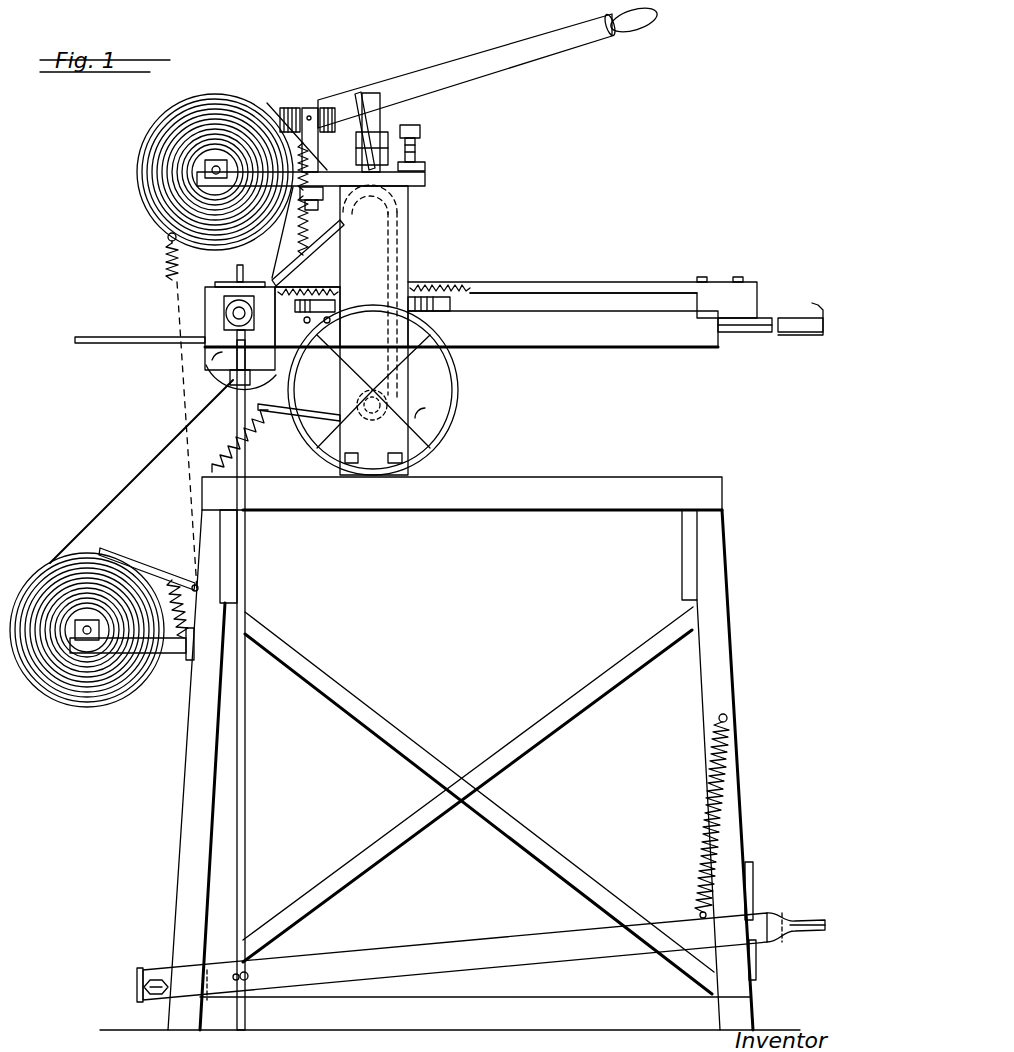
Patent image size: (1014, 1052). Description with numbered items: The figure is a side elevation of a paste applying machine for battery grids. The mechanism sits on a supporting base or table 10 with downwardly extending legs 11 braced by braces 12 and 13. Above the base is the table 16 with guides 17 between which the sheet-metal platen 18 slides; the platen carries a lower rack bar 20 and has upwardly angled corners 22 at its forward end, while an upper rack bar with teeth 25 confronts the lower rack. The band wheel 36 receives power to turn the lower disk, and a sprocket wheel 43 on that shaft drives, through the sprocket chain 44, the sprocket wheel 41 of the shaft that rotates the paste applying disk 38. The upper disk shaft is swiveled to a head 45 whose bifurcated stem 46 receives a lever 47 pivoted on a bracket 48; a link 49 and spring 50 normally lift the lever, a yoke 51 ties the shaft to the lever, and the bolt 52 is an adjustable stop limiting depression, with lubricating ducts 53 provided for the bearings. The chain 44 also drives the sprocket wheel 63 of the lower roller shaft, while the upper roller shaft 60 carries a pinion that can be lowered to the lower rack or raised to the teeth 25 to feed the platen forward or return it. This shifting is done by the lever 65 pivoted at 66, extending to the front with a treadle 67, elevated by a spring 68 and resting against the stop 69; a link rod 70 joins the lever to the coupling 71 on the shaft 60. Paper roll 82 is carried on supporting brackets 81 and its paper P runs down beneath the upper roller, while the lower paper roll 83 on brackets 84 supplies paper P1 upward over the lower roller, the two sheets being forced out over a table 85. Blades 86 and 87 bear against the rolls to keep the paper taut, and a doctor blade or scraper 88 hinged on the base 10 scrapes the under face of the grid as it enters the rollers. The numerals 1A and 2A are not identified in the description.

The carriage bar 1A is at (368, 282).
The upper bar 2A is at (550, 290).
The supporting base or table 10 is at (640, 478).
The supporting legs 11 is at (195, 820).
The brace 12 is at (425, 1030).
The brace 13 is at (415, 742).
The table 16 is at (600, 350).
The guides 17 is at (600, 308).
The platen 18 is at (745, 333).
The lower rack bar 20 is at (790, 335).
The upwardly angled corners 22 is at (815, 300).
The teeth 25 is at (462, 290).
The band wheel 36 is at (448, 366).
The paste applying disk 38 is at (450, 312).
The sprocket wheel 41 is at (412, 250).
The sprocket wheel 43 is at (394, 302).
The sprocket chain 44 is at (301, 320).
The head 45 is at (356, 150).
The stem 46 is at (385, 118).
The lever 47 is at (548, 52).
The bracket 48 is at (310, 108).
The link 49 is at (165, 238).
The spring 50 is at (165, 262).
The yoke 51 is at (362, 94).
The bolt 52 is at (422, 148).
The lubricating ducts 53 is at (432, 416).
The upper roller shaft 60 is at (205, 308).
The sprocket wheel 63 is at (222, 378).
The lever 65 is at (398, 955).
The pivot 66 is at (145, 988).
The treadle 67 is at (800, 933).
The spring 68 is at (700, 813).
The stop 69 is at (754, 870).
The link rod 70 is at (247, 590).
The coupling 71 is at (232, 345).
The supporting brackets 81 is at (410, 190).
The paper roll 82 is at (222, 96).
The lower paper roll 83 is at (65, 700).
The brackets 84 is at (172, 660).
The table 85 is at (100, 345).
The blade 86 is at (270, 103).
The blade 87 is at (145, 565).
The doctor blade or scraper 88 is at (248, 435).
The paper P is at (285, 275).
The paper P1 is at (95, 515).